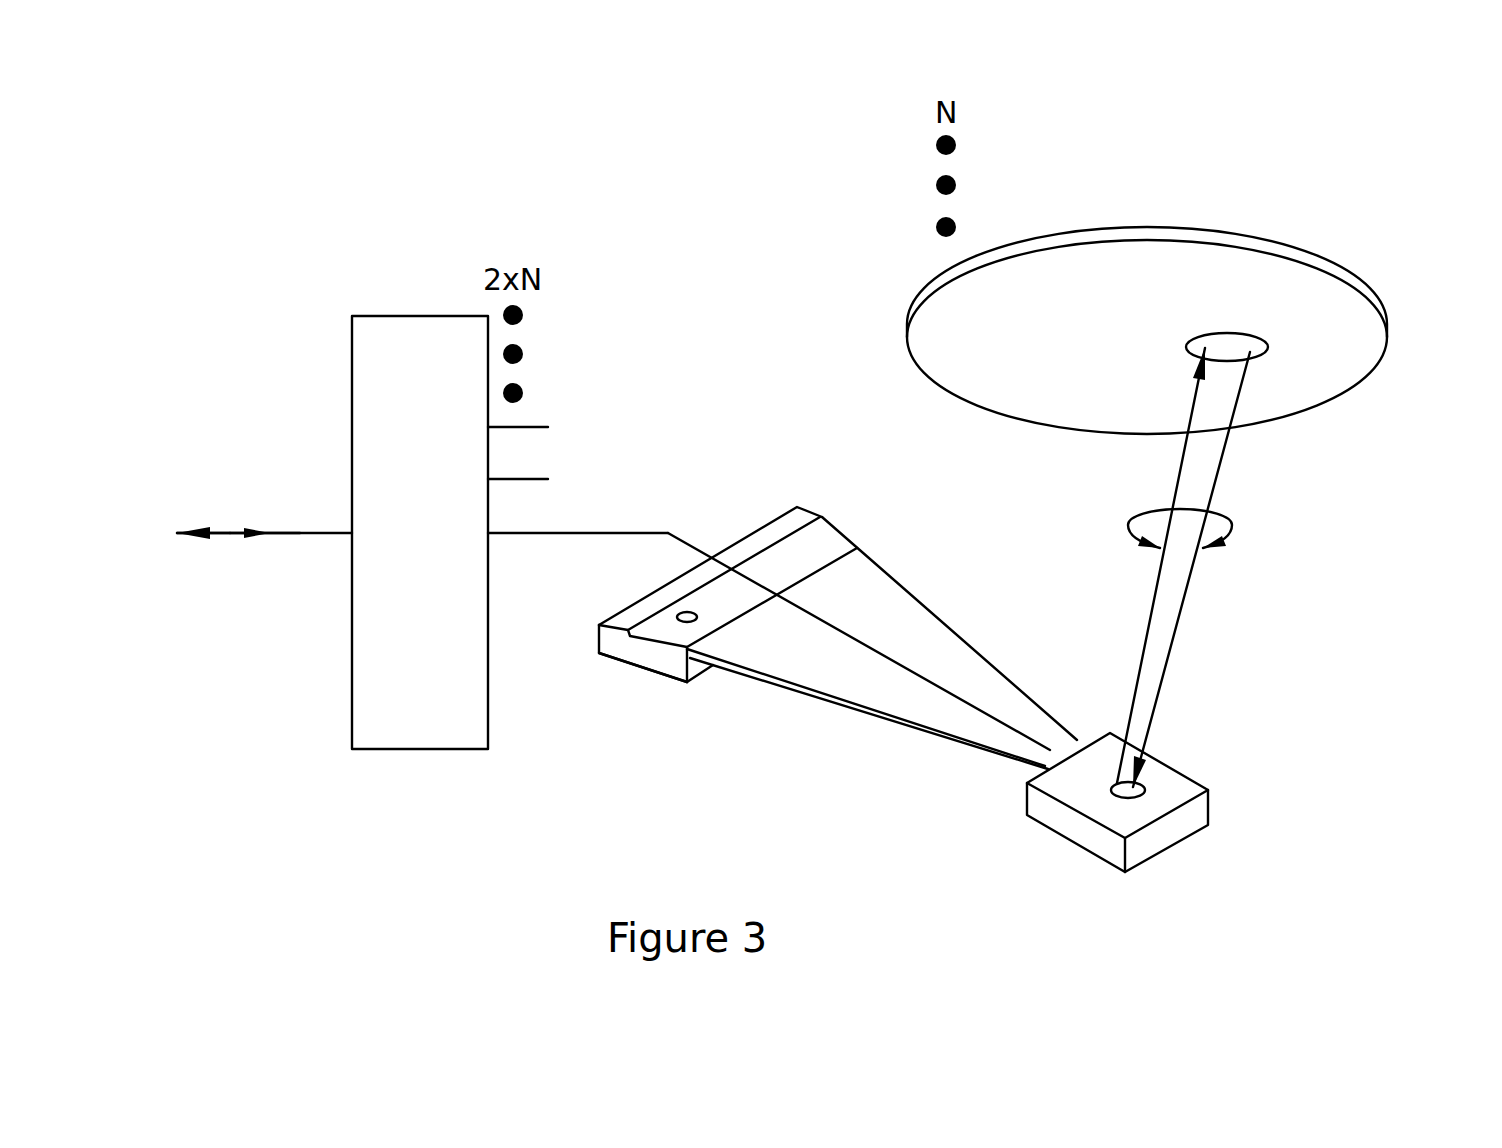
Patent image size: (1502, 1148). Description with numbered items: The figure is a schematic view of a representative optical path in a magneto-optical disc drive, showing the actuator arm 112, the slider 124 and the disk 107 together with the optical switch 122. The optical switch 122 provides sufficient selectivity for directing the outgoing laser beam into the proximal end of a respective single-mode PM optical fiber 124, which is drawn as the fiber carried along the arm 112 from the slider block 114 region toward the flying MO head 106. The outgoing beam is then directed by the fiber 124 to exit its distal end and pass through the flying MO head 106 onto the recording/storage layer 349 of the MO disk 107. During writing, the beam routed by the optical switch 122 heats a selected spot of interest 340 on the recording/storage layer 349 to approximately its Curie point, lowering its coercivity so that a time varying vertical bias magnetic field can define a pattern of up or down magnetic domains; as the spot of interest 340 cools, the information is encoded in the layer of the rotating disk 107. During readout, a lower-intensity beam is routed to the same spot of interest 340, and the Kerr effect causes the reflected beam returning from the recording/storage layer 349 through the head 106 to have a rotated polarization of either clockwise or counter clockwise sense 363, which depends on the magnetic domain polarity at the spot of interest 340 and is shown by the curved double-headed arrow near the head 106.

The flying MO head 106 is at (1212, 808).
The MO disk 107 is at (895, 280).
The suspension arm 112 is at (820, 700).
The slider mount 114 is at (648, 670).
The optical switch 122 is at (400, 315).
The single-mode PM optical fiber 124 is at (728, 633).
The spot of interest 340 is at (1235, 342).
The recording/storage layer 349 is at (1167, 273).
The clockwise or counter clockwise sense 363 is at (1230, 512).